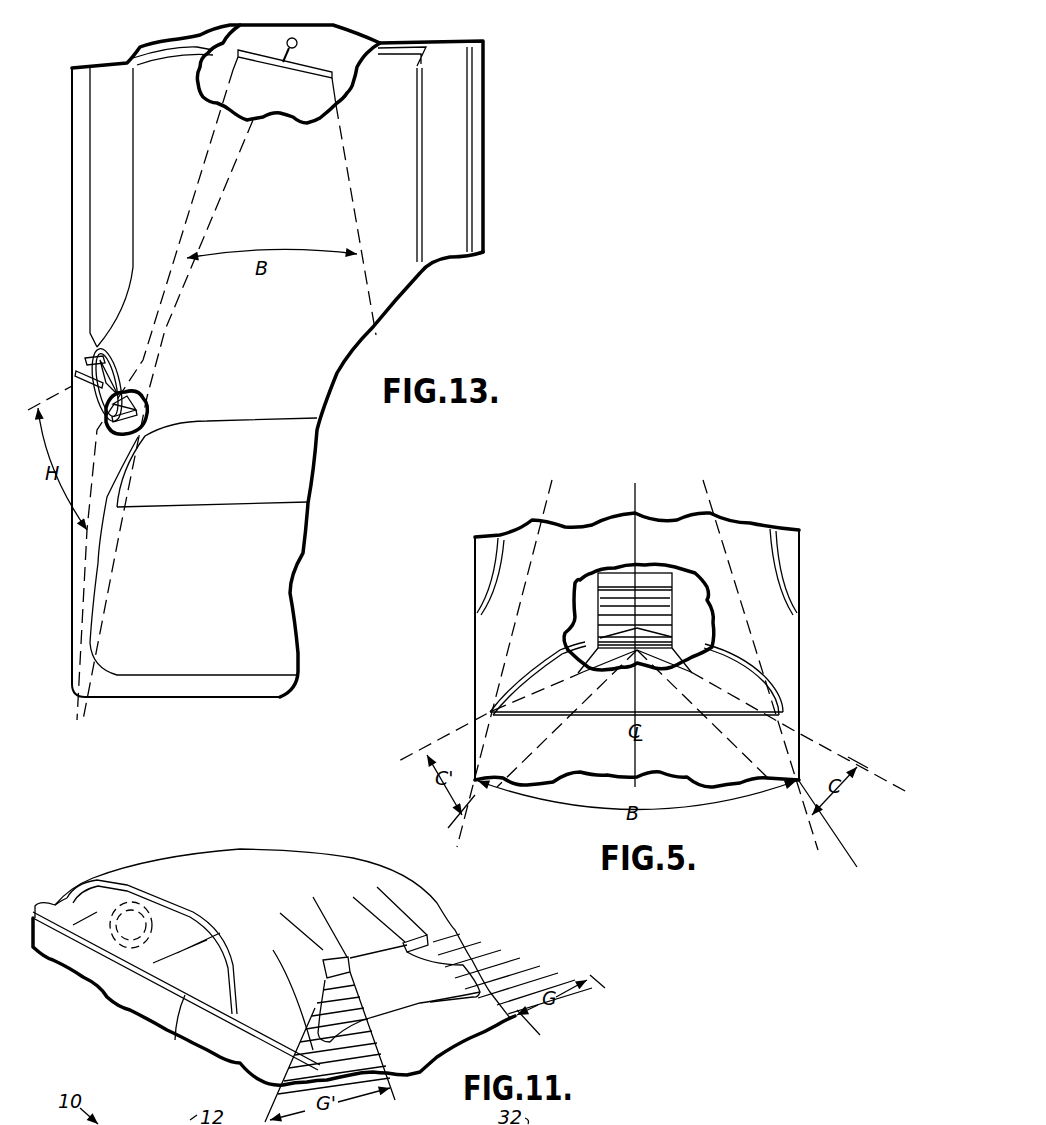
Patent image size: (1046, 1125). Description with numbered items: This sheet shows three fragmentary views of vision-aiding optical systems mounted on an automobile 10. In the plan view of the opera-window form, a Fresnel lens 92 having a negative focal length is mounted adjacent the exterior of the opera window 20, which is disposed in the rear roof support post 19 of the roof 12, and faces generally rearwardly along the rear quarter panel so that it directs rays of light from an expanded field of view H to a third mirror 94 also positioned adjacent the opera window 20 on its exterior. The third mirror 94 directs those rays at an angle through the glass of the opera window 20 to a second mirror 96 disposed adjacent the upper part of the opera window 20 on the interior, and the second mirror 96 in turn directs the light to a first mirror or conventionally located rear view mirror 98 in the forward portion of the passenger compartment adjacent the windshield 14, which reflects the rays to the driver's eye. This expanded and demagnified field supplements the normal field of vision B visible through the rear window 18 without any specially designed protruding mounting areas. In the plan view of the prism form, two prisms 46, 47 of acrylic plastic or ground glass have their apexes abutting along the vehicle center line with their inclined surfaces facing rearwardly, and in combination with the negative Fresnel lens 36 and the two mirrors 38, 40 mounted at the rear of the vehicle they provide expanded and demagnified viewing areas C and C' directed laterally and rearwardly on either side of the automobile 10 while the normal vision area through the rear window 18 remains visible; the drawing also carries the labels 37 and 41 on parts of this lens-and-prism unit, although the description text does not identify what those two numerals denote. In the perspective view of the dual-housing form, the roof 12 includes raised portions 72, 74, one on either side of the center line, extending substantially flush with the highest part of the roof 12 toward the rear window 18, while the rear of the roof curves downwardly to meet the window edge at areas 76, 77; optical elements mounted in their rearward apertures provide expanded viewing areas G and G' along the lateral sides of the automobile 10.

In FIG. 13, the automobile 10 is at (494, 66).
In FIG. 11, the automobile 10 is at (258, 815).
In FIG. 13, the roof portion 12 is at (422, 154).
In FIG. 11, the roof portion 12 is at (282, 933).
In FIG. 13, the windshield 14 is at (182, 49).
In FIG. 13, the rear window 18 is at (203, 546).
In FIG. 5, the rear window 18 is at (636, 678).
In FIG. 11, the rear window 18 is at (405, 1008).
In FIG. 13, the rear roof support post 19 is at (117, 335).
In FIG. 13, the opera window 20 is at (120, 352).
In FIG. 5, the Fresnel lens 36 is at (672, 633).
In FIG. 5, the flange 37 is at (590, 665).
In FIG. 5, the mirror 38 is at (648, 598).
In FIG. 5, the mirror 40 is at (669, 559).
In FIG. 5, the washer 41 is at (613, 587).
In FIG. 5, the prism 46 is at (605, 628).
In FIG. 5, the prism 47 is at (655, 623).
In FIG. 11, the raised roof portion 72 is at (313, 948).
In FIG. 11, the raised roof portion 74 is at (397, 930).
In FIG. 11, the downwardly curving rear roof portion 76 is at (287, 972).
In FIG. 11, the downwardly curving rear roof portion 77 is at (412, 942).
In FIG. 13, the Fresnel lens 92 is at (74, 397).
In FIG. 13, the third mirror 94 is at (94, 359).
In FIG. 13, the second mirror 96 is at (146, 417).
In FIG. 13, the first mirror 98 is at (303, 65).